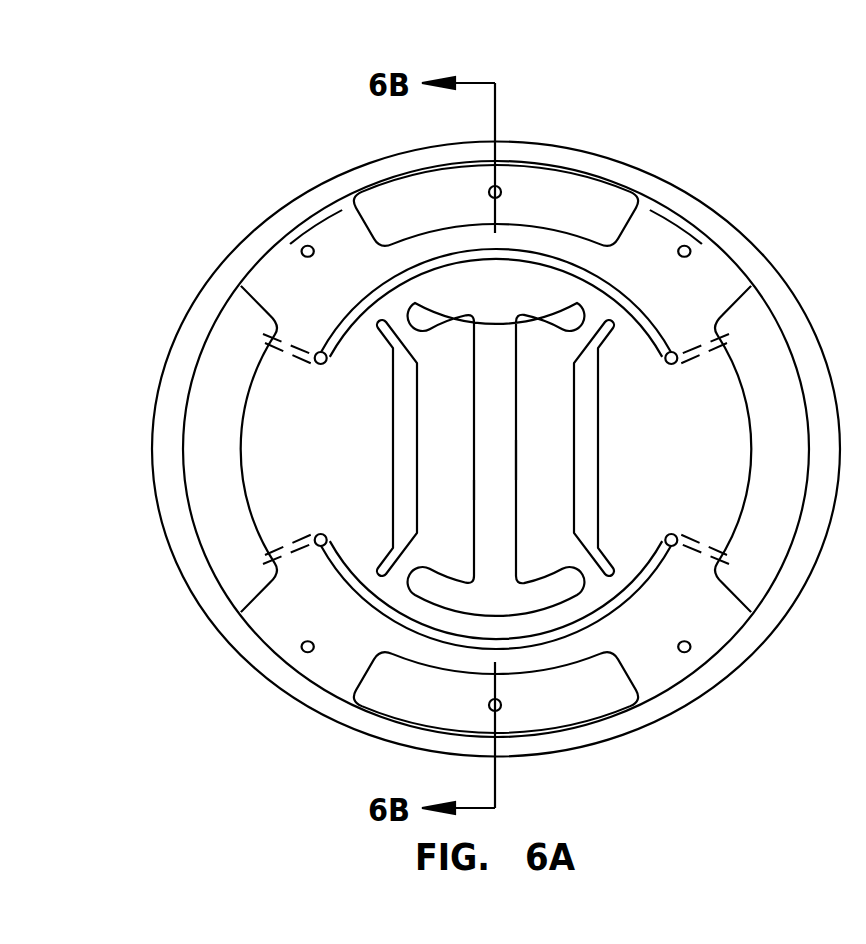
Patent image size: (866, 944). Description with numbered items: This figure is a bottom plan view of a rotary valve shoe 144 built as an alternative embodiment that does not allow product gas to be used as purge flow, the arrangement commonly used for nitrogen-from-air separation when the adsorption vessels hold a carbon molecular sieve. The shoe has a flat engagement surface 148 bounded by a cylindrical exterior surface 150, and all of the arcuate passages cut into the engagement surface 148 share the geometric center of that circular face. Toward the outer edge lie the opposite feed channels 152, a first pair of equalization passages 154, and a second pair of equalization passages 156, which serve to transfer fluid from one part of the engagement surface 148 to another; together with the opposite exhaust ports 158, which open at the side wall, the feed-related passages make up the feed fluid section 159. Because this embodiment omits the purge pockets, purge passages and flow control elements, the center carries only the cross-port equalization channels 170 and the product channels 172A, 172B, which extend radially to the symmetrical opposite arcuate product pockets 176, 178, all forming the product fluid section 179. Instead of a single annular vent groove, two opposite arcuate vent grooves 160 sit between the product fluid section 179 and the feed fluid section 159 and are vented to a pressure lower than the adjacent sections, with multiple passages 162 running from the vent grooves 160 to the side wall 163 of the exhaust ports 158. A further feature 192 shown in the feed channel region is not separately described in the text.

The rotary valve shoe 144 is at (806, 162).
The engagement surface 148 is at (707, 285).
The cylindrical exterior surface 150 is at (590, 148).
The feed channels 152 is at (410, 162).
The first pair of equalization passages 154 is at (690, 250).
The second pair of equalization passages 156 is at (302, 250).
The exhaust ports 158 is at (232, 352).
The feed fluid section 159 is at (695, 627).
The arcuate vent grooves 160 is at (355, 683).
The passages 162 is at (321, 531).
The side wall of exhaust ports 163 is at (243, 513).
The cross-port equalization channels 170 is at (393, 413).
The product channel 172A is at (512, 425).
The product channel 172B is at (518, 473).
The arcuate product channel or pocket 176 is at (480, 282).
The arcuate product channel or pocket 178 is at (508, 617).
The product fluid section 179 is at (562, 515).
The center hole 192 is at (497, 186).